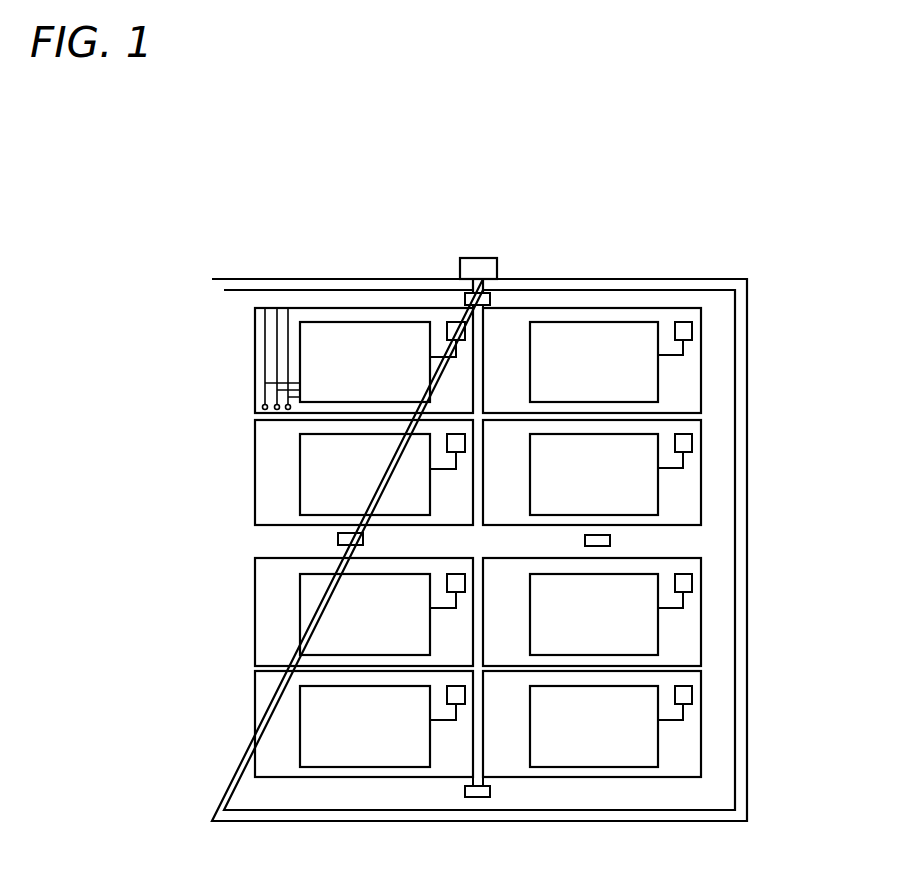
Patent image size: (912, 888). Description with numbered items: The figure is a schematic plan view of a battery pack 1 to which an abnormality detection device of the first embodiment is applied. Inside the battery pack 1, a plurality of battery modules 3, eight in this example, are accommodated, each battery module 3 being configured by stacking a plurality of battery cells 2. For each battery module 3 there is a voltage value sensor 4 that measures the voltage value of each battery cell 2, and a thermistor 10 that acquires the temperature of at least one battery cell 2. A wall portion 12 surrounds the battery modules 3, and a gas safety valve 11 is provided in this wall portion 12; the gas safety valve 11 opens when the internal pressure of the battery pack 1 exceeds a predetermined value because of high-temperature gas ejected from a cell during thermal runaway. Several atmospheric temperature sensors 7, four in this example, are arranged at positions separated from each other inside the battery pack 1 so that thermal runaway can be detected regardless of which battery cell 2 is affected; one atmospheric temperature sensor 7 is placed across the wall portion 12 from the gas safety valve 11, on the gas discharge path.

The battery pack 1 is at (634, 238).
The battery cell 2 is at (287, 308).
The battery module 3 is at (363, 308).
The voltage value sensor 4 is at (408, 455).
The atmospheric temperature sensor 7 is at (490, 297).
The thermistor 10 is at (455, 320).
The gas safety valve 11 is at (482, 258).
The wall portion 12 is at (565, 279).